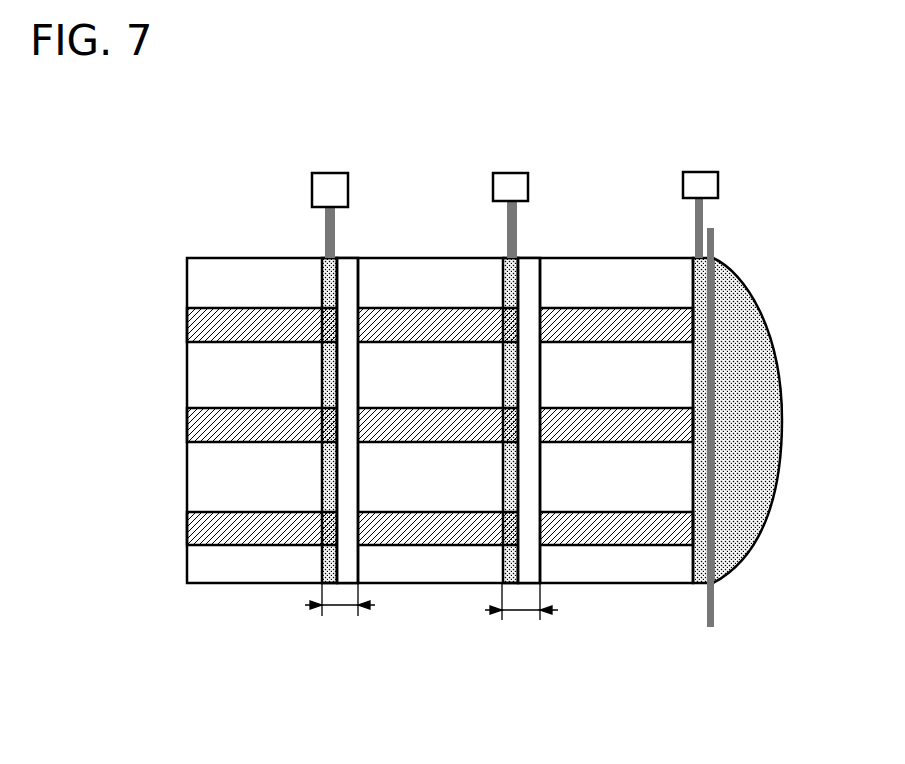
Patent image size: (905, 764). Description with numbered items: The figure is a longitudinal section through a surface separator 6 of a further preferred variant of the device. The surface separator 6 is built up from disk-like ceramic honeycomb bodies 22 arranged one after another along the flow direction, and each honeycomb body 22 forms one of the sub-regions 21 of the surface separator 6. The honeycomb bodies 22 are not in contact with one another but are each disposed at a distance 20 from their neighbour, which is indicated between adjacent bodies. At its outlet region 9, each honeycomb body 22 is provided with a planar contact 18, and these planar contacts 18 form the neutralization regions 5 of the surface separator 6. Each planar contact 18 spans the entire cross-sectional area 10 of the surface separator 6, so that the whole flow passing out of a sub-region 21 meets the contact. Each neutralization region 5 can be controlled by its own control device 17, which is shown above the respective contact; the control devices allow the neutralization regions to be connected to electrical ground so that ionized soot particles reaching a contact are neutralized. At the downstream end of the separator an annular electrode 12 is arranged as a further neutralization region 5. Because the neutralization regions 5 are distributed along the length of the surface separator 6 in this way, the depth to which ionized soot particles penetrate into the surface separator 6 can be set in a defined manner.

The neutralization region 5 is at (340, 258).
The surface separator 6 is at (147, 332).
The outlet region 9 is at (340, 258).
The cross-sectional area 10 is at (752, 562).
The annular electrode 12 is at (783, 372).
The control device 17 is at (312, 173).
The planar contact 18 is at (330, 275).
The distance 20 is at (340, 615).
The sub-region 21 is at (277, 588).
The honeycomb body 22 is at (258, 588).